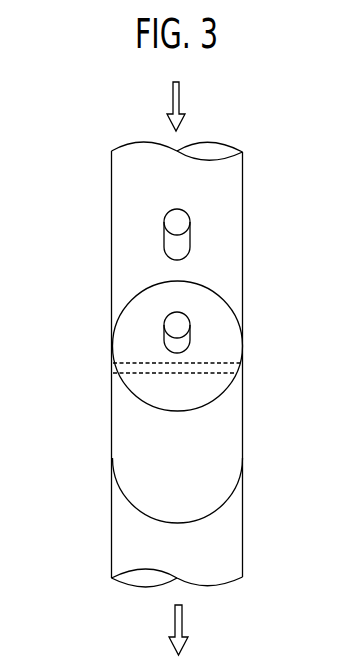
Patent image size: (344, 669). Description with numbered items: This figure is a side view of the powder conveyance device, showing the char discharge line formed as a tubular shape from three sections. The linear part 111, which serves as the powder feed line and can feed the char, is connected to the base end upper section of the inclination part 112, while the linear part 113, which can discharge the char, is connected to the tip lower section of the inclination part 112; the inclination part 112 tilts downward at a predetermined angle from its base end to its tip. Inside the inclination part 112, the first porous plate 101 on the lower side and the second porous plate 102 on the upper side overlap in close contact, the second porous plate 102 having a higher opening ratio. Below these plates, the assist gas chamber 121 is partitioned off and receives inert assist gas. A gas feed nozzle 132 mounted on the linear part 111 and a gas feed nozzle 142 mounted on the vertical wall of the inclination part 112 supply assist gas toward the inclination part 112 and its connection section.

The first porous plate 101 is at (217, 373).
The second porous plate 102 is at (217, 362).
The linear part 111 is at (127, 233).
The inclination part 112 is at (127, 434).
The linear part 113 is at (128, 540).
The assist gas chamber 121 is at (170, 392).
The gas feed nozzle 132 is at (177, 245).
The gas feed nozzle 142 is at (177, 327).